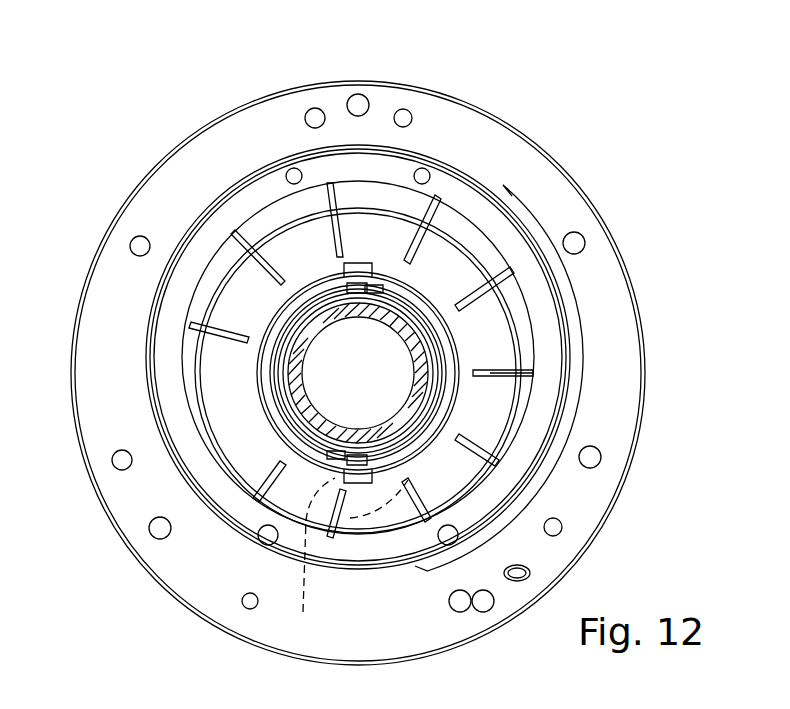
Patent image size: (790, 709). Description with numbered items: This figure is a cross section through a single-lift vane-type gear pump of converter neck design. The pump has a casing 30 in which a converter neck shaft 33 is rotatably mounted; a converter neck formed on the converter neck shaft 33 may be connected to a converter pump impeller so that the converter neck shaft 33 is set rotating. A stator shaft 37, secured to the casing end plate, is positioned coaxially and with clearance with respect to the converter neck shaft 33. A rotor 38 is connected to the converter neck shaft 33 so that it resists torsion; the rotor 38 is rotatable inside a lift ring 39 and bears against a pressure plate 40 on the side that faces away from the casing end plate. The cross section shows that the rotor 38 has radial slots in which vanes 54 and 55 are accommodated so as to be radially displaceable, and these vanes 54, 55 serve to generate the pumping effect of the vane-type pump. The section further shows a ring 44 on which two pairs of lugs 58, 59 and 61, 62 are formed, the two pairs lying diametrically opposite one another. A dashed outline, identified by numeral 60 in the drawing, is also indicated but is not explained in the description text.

The casing 30 is at (541, 178).
The converter neck shaft 33 is at (395, 440).
The stator shaft 37 is at (282, 418).
The rotor 38 is at (493, 421).
The lift ring 39 is at (538, 303).
The pressure plate 40 is at (480, 243).
The ring 44 is at (455, 346).
The vane 54 is at (198, 322).
The vane 55 is at (243, 228).
The lug 58 is at (353, 282).
The lug 59 is at (358, 290).
The hidden spring 60 is at (347, 557).
The lug 61 is at (356, 470).
The lug 62 is at (358, 482).